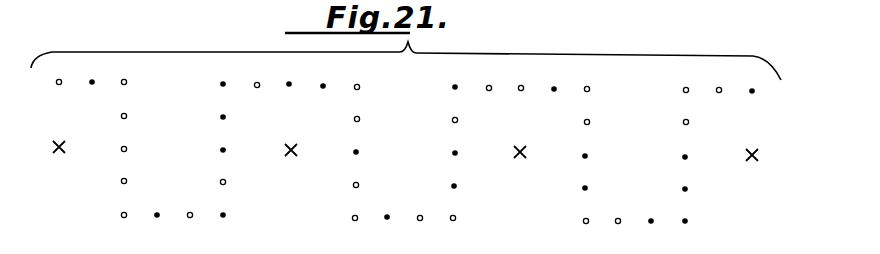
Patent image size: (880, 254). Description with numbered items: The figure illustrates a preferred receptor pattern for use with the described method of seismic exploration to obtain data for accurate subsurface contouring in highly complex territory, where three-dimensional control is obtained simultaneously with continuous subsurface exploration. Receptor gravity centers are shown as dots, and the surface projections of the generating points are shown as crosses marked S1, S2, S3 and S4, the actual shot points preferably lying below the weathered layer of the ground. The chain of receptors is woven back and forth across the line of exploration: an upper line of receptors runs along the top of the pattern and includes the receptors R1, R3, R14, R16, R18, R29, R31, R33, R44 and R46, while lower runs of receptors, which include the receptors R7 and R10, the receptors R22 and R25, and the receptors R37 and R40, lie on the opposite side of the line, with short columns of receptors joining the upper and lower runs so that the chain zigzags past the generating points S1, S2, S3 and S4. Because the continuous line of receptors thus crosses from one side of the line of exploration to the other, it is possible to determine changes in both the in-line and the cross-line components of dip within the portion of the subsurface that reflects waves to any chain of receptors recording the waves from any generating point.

The relay contact R1 is at (64, 74).
The relay contact R3 is at (129, 74).
The relay contact R14 is at (231, 76).
The relay contact R16 is at (297, 76).
The relay contact R18 is at (365, 79).
The relay contact R29 is at (463, 79).
The relay contact R31 is at (529, 80).
The relay contact R33 is at (595, 81).
The relay contact R44 is at (694, 82).
The relay contact R46 is at (760, 83).
The relay contact R7 is at (125, 225).
The relay contact R10 is at (228, 225).
The relay contact R22 is at (358, 228).
The relay contact R25 is at (458, 228).
The relay contact R37 is at (589, 231).
The relay contact R40 is at (690, 231).
The switch S1 is at (59, 159).
The switch S2 is at (292, 163).
The switch S3 is at (520, 165).
The switch S4 is at (752, 168).